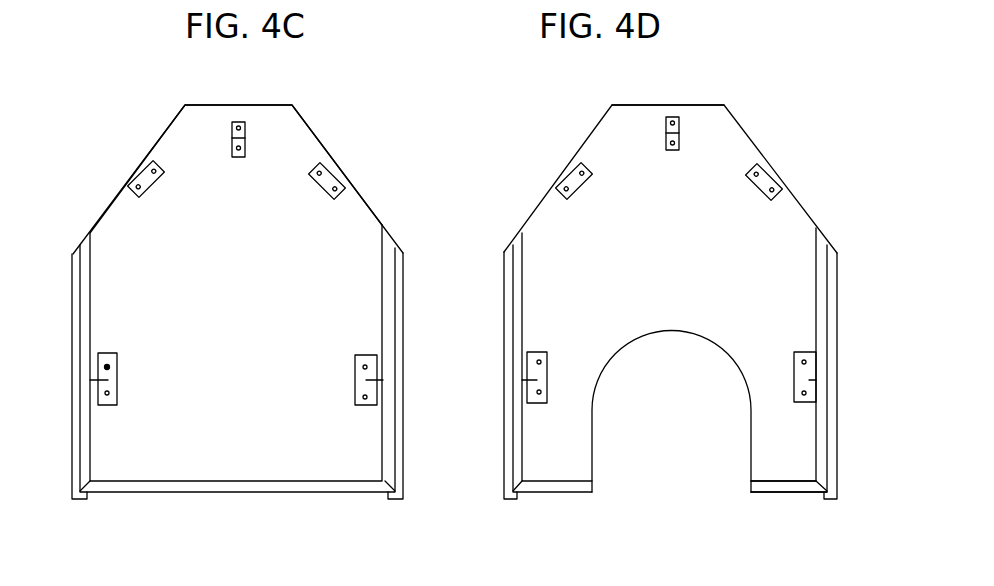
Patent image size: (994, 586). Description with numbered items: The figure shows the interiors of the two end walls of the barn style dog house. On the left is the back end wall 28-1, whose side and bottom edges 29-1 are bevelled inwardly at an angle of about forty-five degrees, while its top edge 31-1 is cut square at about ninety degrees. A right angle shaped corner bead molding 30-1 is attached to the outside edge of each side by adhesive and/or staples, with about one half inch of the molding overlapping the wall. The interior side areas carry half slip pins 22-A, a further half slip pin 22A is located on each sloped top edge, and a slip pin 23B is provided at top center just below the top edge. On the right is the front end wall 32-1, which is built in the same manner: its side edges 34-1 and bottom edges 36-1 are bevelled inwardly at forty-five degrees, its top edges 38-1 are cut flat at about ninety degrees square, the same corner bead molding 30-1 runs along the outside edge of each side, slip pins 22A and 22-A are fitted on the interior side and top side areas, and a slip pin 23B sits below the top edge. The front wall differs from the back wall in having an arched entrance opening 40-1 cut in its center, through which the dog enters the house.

In FIG. 4C, the half slip pin 22-A is at (133, 178).
In FIG. 4D, the half slip pin 22-A is at (784, 192).
In FIG. 4D, the half slip pin 22A is at (562, 175).
In FIG. 4C, the slip pin 23B is at (245, 132).
In FIG. 4D, the slip pin 23B is at (680, 128).
In FIG. 4C, the back end wall 28-1 is at (313, 127).
In FIG. 4C, the side and bottom edges 29-1 is at (388, 287).
In FIG. 4C, the corner bead molding 30-1 is at (78, 392).
In FIG. 4D, the corner bead molding 30-1 is at (508, 443).
In FIG. 4C, the top edge 31-1 is at (217, 105).
In FIG. 4D, the front end wall 32-1 is at (622, 103).
In FIG. 4D, the side edges 34-1 is at (822, 238).
In FIG. 4D, the bottom edges 36-1 is at (792, 488).
In FIG. 4D, the top edges 38-1 is at (661, 103).
In FIG. 4D, the entrance opening 40-1 is at (670, 457).